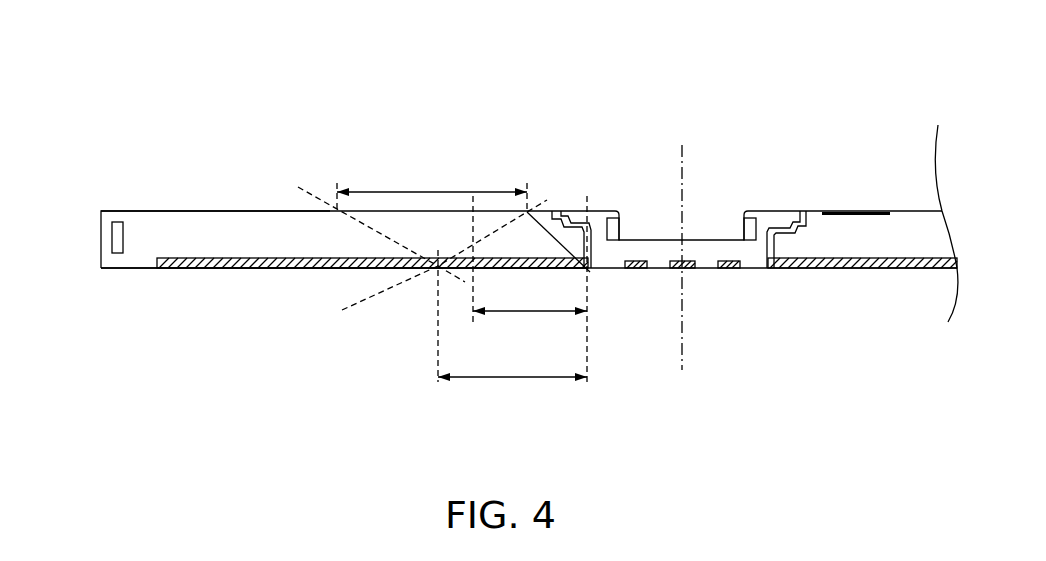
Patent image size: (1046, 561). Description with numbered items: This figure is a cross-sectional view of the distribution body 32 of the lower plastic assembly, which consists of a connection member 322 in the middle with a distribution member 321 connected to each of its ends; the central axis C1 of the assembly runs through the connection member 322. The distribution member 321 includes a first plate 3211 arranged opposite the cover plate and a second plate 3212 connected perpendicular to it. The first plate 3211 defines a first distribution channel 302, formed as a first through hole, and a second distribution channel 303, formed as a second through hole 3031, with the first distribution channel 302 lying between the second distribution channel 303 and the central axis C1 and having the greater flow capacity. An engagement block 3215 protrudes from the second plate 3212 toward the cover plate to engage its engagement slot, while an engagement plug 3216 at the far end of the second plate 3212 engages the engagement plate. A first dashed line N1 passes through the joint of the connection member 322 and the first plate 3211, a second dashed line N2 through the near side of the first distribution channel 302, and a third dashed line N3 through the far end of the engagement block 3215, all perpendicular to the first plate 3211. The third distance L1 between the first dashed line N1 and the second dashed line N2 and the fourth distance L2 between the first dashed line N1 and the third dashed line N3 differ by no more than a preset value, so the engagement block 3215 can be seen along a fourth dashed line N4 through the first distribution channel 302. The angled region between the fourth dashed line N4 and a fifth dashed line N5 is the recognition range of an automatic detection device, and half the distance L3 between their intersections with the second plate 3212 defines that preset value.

The distribution body 32 is at (515, 41).
The distribution member 321 is at (268, 132).
The engagement plug 3216 is at (121, 220).
The second plate 3212 is at (244, 225).
The first plate 3211 is at (173, 270).
The engagement block 3215 is at (588, 267).
The connection member 322 is at (708, 248).
The second distribution channel 303 is at (289, 278).
The second through hole 3031 is at (557, 263).
The first distribution channel 302 is at (434, 282).
The central axis C1 is at (692, 347).
The first dashed line N1 is at (591, 307).
The second dashed line N2 is at (438, 334).
The third dashed line N3 is at (471, 271).
The fourth dashed line N4 is at (454, 270).
The fifth dashed line N5 is at (361, 228).
The third distance L1 is at (512, 391).
The fourth distance L2 is at (530, 326).
The distance L3 is at (432, 188).